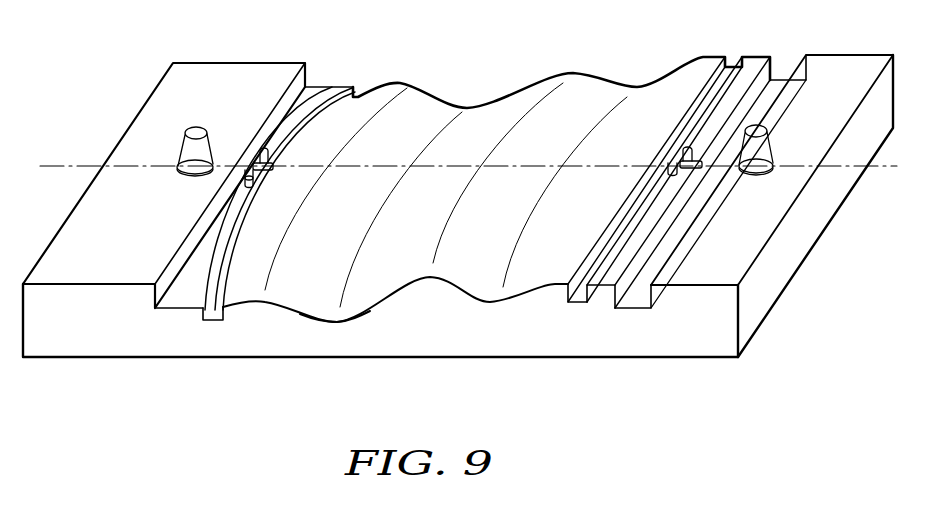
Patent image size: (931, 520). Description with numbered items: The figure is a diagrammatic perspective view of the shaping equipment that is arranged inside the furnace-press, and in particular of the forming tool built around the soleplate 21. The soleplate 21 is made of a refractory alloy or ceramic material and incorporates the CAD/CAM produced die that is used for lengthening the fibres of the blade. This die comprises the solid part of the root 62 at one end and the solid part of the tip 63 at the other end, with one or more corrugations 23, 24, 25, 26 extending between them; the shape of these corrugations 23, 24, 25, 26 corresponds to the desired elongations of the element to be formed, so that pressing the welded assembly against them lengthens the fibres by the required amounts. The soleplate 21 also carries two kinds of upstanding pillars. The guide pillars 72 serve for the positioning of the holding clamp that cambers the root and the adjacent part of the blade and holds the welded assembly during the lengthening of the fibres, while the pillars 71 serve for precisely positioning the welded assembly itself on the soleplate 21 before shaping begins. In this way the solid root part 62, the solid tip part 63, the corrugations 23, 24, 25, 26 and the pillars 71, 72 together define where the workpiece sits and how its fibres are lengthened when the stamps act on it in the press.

The soleplate 21 is at (288, 325).
The corrugation 23 is at (634, 85).
The corrugation 24 is at (465, 104).
The corrugation 25 is at (490, 302).
The corrugation 26 is at (337, 322).
The solid part of the root 62 is at (358, 87).
The solid part of the tip 63 is at (728, 56).
The pillars 71 is at (251, 168).
The guide pillars 72 is at (187, 150).